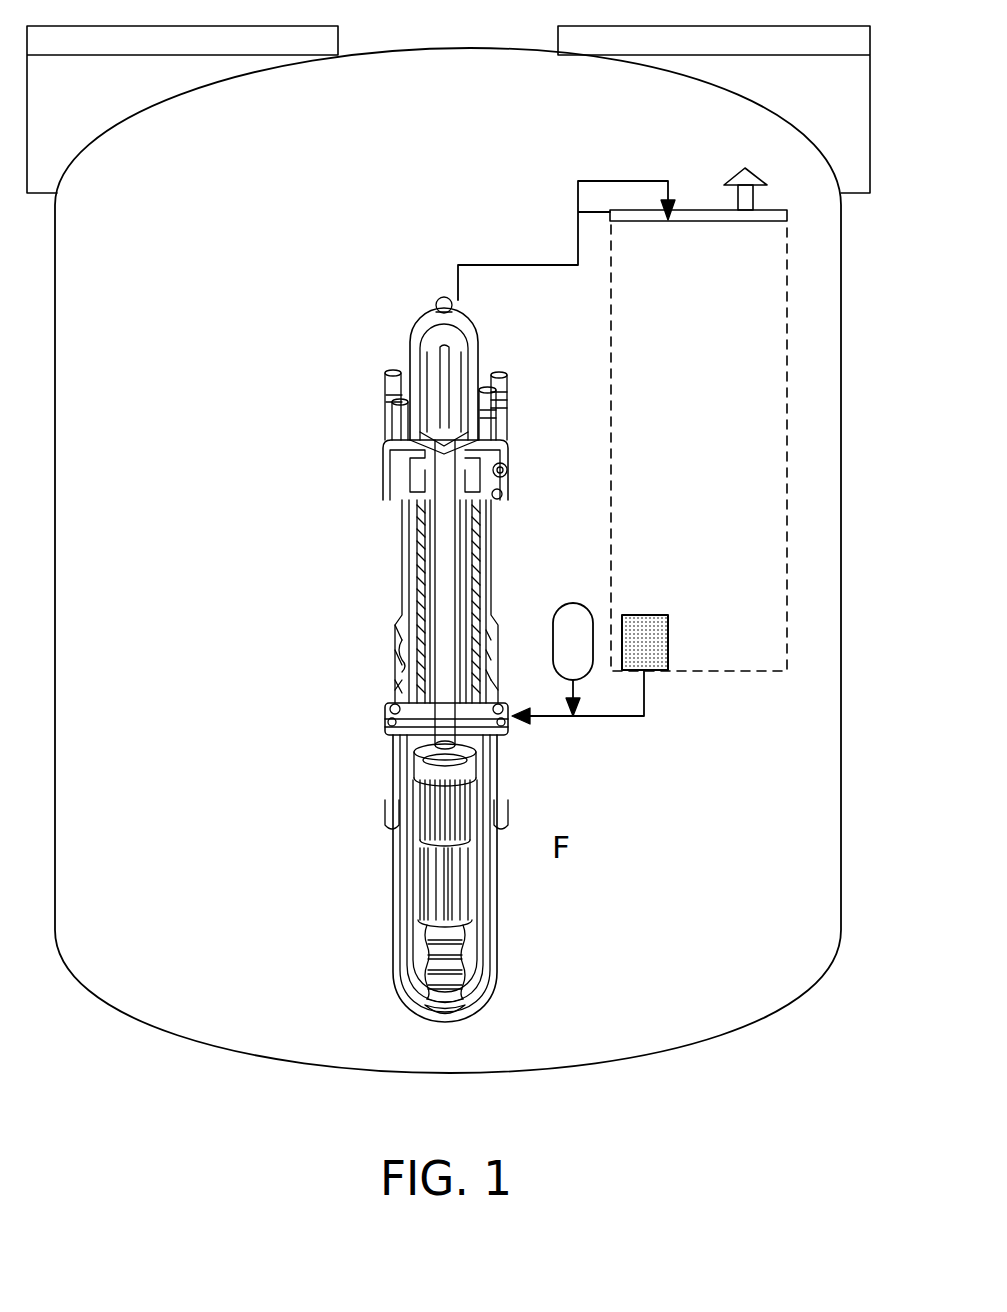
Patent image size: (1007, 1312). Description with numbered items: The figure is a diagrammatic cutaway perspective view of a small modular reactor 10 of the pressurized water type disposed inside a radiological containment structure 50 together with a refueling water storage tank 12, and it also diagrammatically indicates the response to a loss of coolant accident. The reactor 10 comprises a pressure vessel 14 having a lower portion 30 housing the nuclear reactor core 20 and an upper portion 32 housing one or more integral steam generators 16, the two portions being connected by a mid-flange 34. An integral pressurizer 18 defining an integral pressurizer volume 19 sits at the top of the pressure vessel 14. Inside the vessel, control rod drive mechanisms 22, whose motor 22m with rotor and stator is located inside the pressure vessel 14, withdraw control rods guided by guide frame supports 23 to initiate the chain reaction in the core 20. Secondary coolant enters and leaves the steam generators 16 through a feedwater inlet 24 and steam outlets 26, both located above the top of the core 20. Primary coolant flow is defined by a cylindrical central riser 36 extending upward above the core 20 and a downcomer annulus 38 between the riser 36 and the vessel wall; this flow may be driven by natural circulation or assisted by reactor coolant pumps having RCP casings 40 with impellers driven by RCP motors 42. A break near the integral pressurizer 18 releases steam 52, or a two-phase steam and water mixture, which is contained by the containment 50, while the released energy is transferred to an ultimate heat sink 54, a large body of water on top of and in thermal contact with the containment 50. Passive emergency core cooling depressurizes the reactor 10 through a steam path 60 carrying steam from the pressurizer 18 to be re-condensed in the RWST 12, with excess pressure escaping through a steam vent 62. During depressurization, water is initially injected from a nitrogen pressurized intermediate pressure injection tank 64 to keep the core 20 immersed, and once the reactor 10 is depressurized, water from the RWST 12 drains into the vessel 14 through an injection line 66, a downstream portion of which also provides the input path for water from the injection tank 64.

The small modular reactor 10 is at (343, 397).
The refueling water storage tank 12 is at (698, 440).
The pressure vessel 14 is at (358, 601).
The steam generators 16 is at (371, 594).
The integral pressurizer 18 is at (493, 369).
The integral pressurizer volume 19 is at (371, 341).
The nuclear reactor core 20 is at (361, 964).
The control rod drive mechanisms 22 is at (378, 771).
The motor 22m is at (337, 817).
The guide frame supports 23 is at (388, 887).
The feedwater inlet 24 is at (360, 672).
The steam outlets 26 is at (334, 647).
The lower portion 30 is at (500, 878).
The upper portion 32 is at (528, 601).
The mid-flange 34 is at (492, 754).
The central riser 36 is at (520, 591).
The downcomer annulus 38 is at (506, 636).
The RCP casings 40 is at (379, 475).
The RCP motors 42 is at (482, 397).
The radiological containment structure 50 is at (448, 592).
The steam 52 is at (352, 224).
The ultimate heat sink 54 is at (448, 109).
The steam path 60 is at (566, 228).
The steam vent 62 is at (694, 151).
The intermediate pressure injection tank 64 is at (549, 659).
The injection line 66 is at (631, 714).